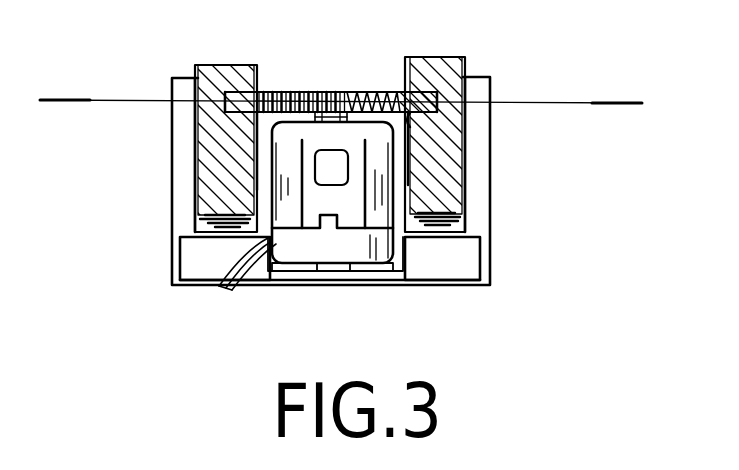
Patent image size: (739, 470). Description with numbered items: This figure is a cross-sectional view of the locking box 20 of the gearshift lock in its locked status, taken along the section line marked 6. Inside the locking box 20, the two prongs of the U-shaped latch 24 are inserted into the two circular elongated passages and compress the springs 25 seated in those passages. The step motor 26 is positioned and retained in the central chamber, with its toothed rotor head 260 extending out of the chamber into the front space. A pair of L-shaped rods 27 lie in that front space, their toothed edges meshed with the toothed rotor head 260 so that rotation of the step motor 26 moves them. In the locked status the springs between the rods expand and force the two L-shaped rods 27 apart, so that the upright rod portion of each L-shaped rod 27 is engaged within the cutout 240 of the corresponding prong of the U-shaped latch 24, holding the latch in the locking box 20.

The locking box 20 is at (500, 186).
The U-shaped latch 24 is at (229, 78).
The spring 25 is at (200, 222).
The step motor 26 is at (371, 253).
The L-shaped rod 27 is at (259, 112).
The cutout 240 is at (227, 120).
The toothed rotor head 260 is at (338, 91).
The section line 6- 6 is at (55, 101).